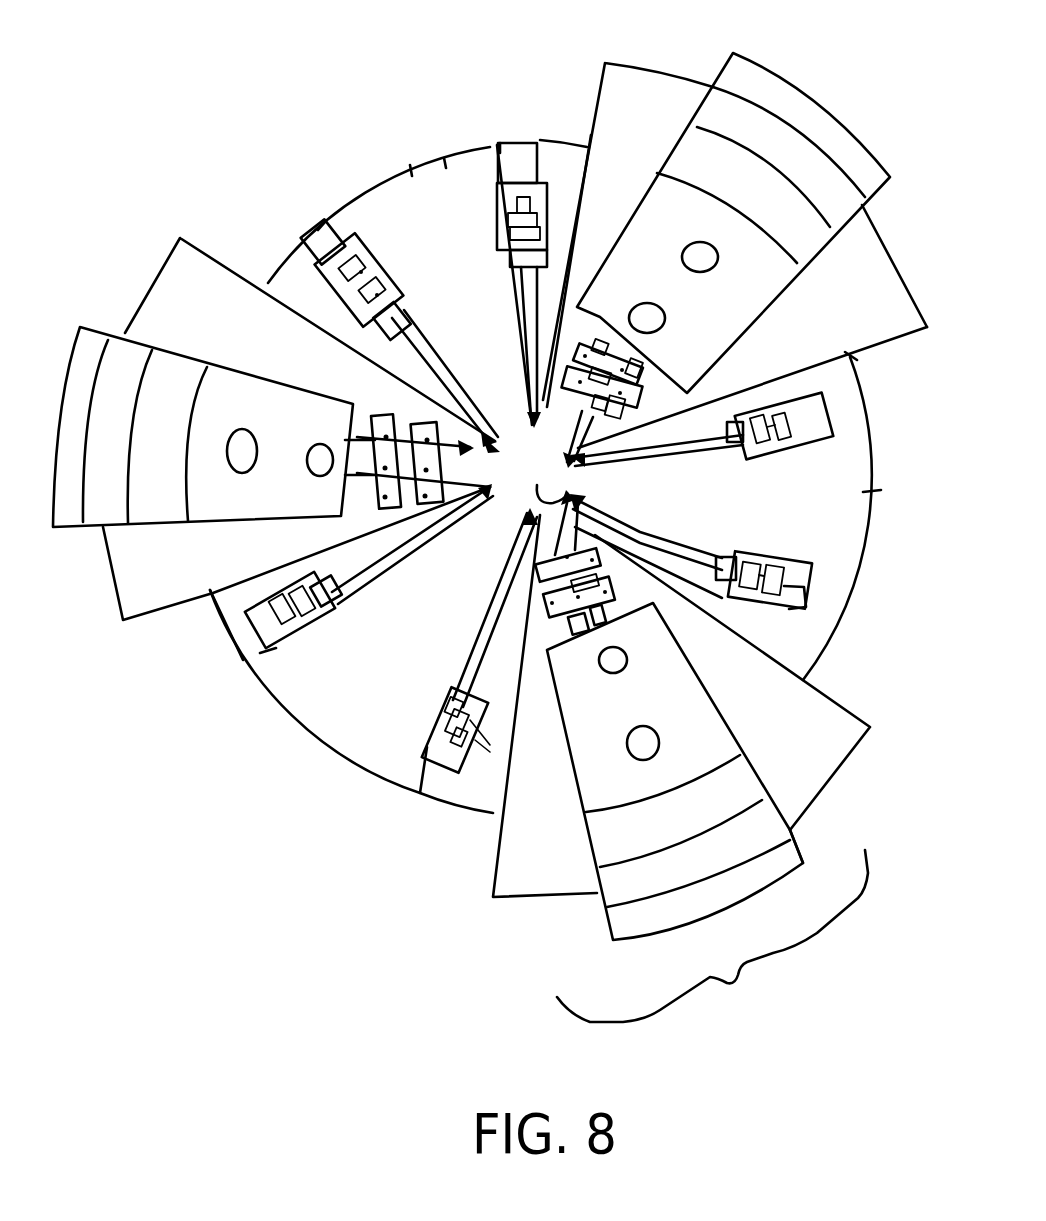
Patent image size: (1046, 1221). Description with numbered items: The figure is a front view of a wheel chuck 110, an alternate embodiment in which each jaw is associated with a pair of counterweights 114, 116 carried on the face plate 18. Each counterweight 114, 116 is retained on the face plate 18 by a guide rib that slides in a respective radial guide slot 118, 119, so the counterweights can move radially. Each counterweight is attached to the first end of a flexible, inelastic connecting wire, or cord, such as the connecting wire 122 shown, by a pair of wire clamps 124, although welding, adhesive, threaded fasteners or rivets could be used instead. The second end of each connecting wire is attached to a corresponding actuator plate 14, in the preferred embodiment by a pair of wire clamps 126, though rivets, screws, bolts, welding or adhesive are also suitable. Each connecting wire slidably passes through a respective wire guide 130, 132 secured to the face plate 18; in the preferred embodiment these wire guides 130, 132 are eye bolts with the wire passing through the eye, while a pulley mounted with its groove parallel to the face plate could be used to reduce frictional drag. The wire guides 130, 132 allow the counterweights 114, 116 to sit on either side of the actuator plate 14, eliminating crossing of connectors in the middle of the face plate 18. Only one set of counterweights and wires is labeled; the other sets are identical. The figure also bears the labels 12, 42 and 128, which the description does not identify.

The wheel chuck 110 is at (353, 68).
The blade 12 is at (708, 736).
The actuator plate 14 is at (841, 749).
The face plate 18 is at (847, 503).
The rotor section 42 is at (712, 951).
The counterweight 114 is at (427, 745).
The counterweight 116 is at (805, 585).
The radial guide slot 118 is at (423, 797).
The radial guide slot 119 is at (806, 601).
The connecting wire 122 is at (692, 548).
The wire clamps 124 is at (485, 735).
The wire clamps 126 is at (585, 650).
The cable 128 is at (487, 617).
The wire guide 130 is at (525, 515).
The wire guide 132 is at (540, 476).